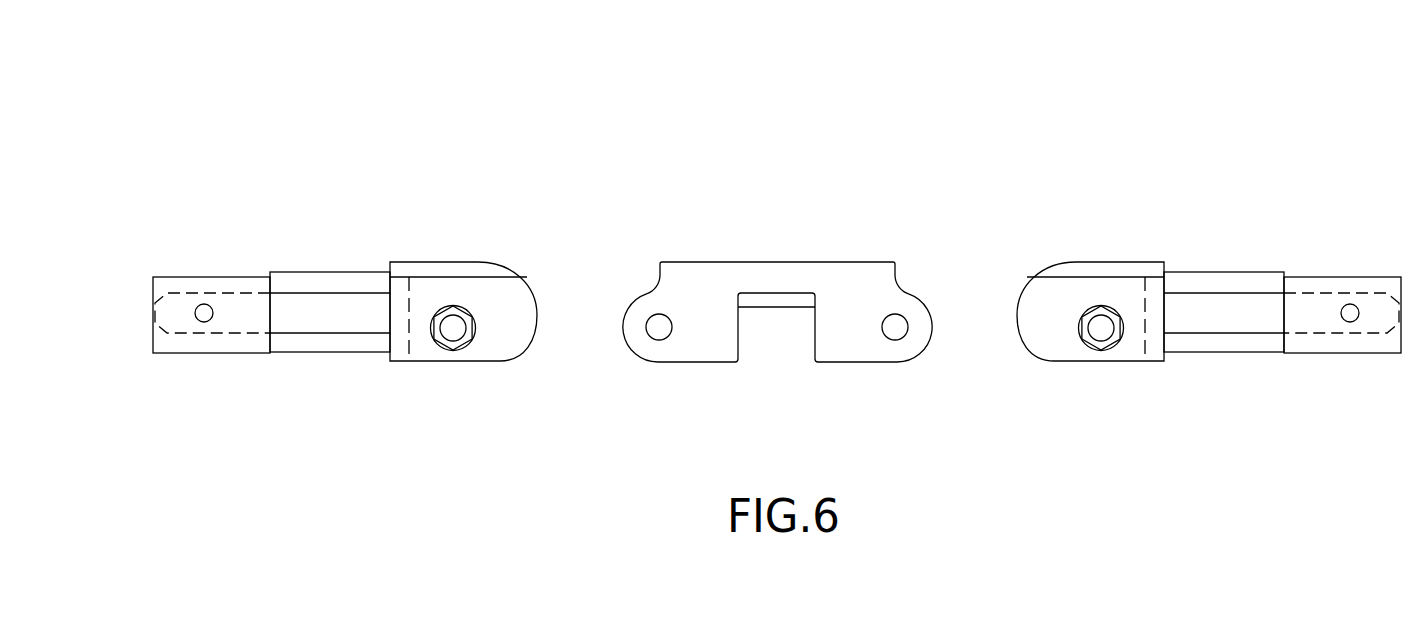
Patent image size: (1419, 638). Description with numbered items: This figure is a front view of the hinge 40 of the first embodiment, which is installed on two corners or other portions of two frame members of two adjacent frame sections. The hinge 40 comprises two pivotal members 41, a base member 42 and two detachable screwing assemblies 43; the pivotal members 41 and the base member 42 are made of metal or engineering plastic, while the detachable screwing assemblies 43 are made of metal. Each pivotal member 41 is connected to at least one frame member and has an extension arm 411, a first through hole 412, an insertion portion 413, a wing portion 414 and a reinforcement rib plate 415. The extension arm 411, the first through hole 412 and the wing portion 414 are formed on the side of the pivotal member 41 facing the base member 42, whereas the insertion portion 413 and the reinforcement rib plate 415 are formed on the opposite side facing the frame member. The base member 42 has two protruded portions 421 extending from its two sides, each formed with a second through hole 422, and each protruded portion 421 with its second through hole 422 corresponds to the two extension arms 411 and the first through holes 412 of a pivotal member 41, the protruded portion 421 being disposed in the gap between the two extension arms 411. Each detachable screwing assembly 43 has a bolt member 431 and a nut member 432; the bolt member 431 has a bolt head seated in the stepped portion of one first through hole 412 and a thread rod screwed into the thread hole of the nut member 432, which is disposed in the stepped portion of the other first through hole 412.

The hinge 40 is at (883, 145).
The pivotal member 41 is at (340, 265).
The extension arm 411 is at (525, 312).
The first through hole 412 is at (470, 340).
The insertion portion 413 is at (335, 343).
The wing portion 414 is at (477, 268).
The reinforcement rib plate 415 is at (203, 343).
The base member 42 is at (717, 255).
The protruded portion 421 is at (645, 342).
The second through hole 422 is at (659, 333).
The detachable screwing assembly 43 is at (476, 467).
The bolt member 431 is at (432, 345).
The nut member 432 is at (453, 343).